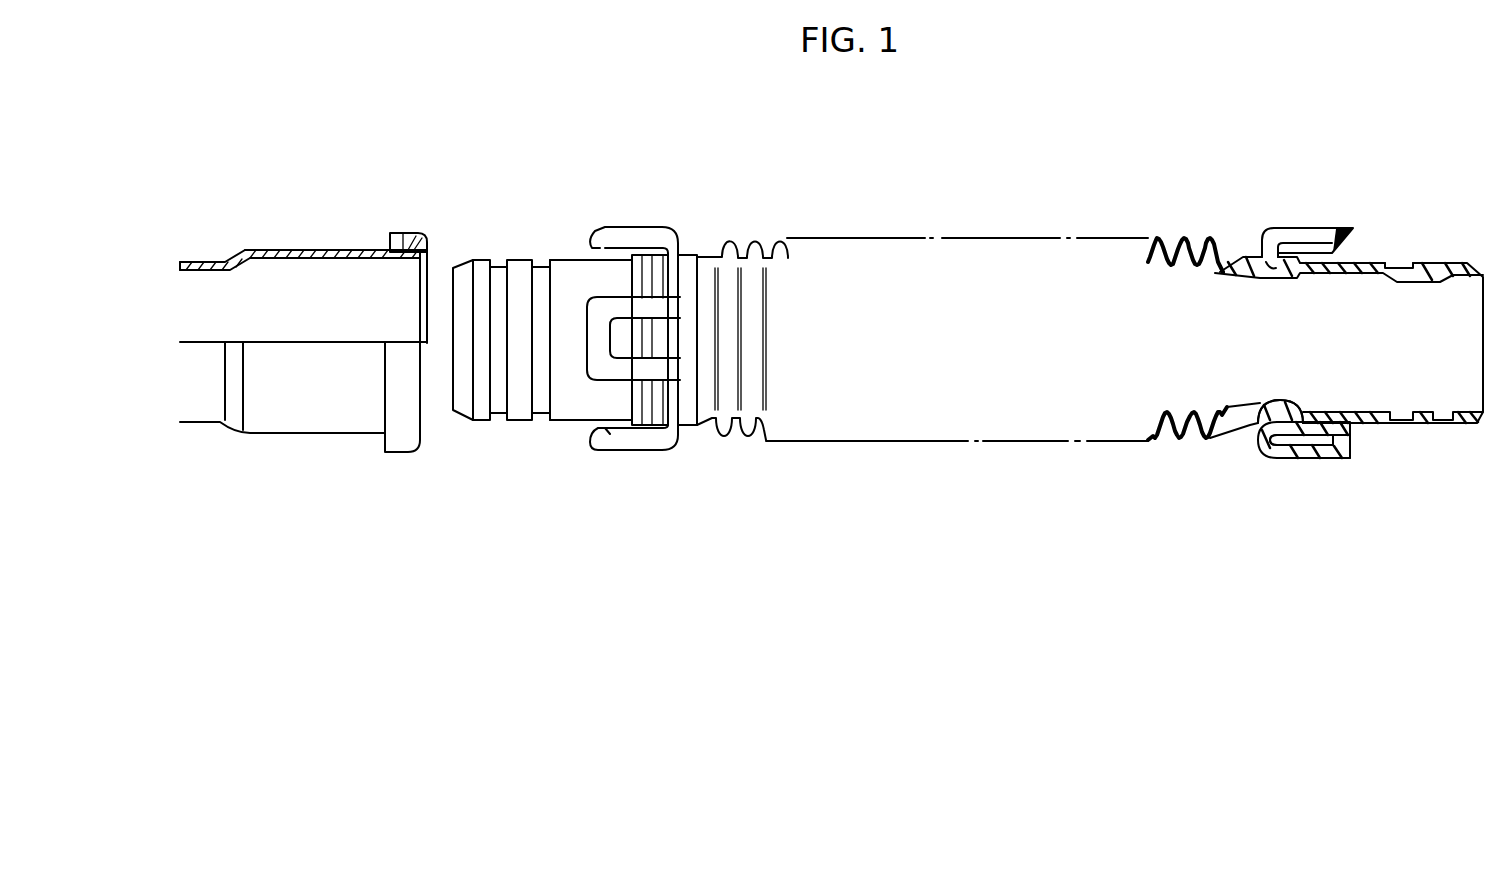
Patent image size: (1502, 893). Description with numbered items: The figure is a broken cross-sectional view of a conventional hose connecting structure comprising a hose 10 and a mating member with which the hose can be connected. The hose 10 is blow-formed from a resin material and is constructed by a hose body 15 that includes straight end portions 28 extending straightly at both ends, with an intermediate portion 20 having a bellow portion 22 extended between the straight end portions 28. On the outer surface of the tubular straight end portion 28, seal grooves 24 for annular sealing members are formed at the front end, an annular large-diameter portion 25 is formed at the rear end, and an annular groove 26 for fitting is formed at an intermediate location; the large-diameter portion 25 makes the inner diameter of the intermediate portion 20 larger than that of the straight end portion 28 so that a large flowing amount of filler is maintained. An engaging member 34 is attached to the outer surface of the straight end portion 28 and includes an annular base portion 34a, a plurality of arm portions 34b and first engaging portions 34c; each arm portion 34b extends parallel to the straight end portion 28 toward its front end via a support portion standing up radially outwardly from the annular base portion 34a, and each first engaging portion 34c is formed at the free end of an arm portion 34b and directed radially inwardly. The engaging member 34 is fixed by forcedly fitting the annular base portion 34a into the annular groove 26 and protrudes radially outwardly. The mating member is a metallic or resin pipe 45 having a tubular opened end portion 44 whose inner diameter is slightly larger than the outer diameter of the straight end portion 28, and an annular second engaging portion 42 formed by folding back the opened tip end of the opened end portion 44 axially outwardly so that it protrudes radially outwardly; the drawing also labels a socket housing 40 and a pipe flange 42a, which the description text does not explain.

The hose 10 is at (968, 303).
The hose body 15 is at (697, 436).
The intermediate portion 20 is at (985, 225).
The bellow portion 22 is at (780, 240).
The seal groove 24 is at (538, 400).
The annular large-diameter portion 25 is at (1242, 257).
The annular groove 26 is at (1278, 262).
The straight end portion 28 is at (572, 280).
The engaging member 34 is at (655, 228).
The annular base portion 34a is at (1278, 421).
The arm portion 34b is at (1302, 447).
The first engaging portion 34c is at (1350, 433).
The socket housing 40 is at (1349, 340).
The annular second engaging portion 42 is at (403, 232).
The pipe flange 42a is at (384, 436).
The opened end portion 44 is at (318, 240).
The pipe 45 is at (305, 294).